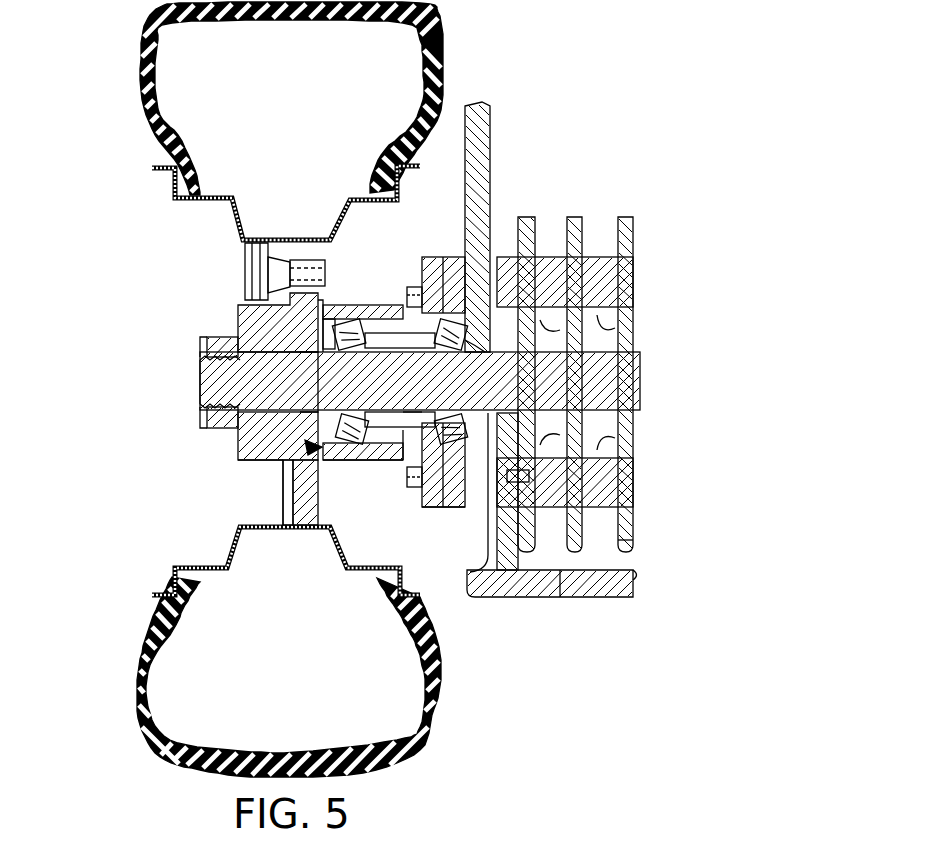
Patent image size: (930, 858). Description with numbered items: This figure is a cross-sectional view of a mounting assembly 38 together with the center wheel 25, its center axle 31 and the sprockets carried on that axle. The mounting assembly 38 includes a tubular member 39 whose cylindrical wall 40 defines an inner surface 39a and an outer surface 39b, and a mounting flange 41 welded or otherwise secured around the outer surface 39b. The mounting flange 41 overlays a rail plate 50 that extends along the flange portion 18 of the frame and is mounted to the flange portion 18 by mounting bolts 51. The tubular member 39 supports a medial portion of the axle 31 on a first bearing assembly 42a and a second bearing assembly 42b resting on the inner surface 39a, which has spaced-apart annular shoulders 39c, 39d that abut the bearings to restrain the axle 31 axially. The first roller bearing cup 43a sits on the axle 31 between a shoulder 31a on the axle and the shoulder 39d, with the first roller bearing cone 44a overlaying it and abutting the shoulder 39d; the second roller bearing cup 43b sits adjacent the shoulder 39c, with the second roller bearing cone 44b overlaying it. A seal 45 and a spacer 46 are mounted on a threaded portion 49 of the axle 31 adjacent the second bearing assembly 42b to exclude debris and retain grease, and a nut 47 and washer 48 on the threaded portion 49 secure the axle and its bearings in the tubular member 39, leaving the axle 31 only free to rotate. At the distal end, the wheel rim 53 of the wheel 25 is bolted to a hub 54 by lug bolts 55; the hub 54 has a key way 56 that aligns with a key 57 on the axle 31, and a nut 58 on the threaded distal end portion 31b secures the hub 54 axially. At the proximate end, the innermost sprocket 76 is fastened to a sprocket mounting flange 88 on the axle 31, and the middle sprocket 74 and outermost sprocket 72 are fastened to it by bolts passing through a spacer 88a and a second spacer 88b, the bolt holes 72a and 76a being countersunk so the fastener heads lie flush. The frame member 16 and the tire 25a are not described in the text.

The housing bracket 16 is at (637, 597).
The flange portion 18 is at (482, 110).
The center wheel 25 is at (154, 767).
The tire 25a is at (440, 60).
The center axle 31 is at (642, 375).
The shoulder 31a is at (497, 370).
The threaded distal end portion 31b is at (197, 397).
The mounting assembly 38 is at (445, 262).
The tubular member 39 is at (360, 462).
The inner surface 39a is at (400, 425).
The outer surface 39b is at (408, 262).
The first annular shoulder 39c is at (280, 500).
The second annular shoulder 39d is at (442, 430).
The cylindrical wall 40 is at (392, 462).
The mounting flange 41 is at (430, 480).
The first bearing assembly 42a is at (633, 268).
The second bearing assembly 42b is at (282, 480).
The first roller bearing cup 43a is at (575, 235).
The second roller bearing cup 43b is at (368, 303).
The first roller bearing cone 44a is at (530, 250).
The second roller bearing cone 44b is at (397, 300).
The seal 45 is at (330, 240).
The spacer 46 is at (320, 415).
The nut 47 is at (247, 320).
The washer 48 is at (247, 442).
The threaded portion 49 is at (290, 368).
The rail plate 50 is at (445, 510).
The mounting bolts 51 is at (425, 465).
The wheel rim 53 is at (155, 595).
The hub 54 is at (280, 460).
The lug bolts 55 is at (245, 250).
The key way 56 is at (238, 330).
The key 57 is at (198, 377).
The nut 58 is at (210, 343).
The outermost sprocket 72 is at (635, 223).
The bolt holes 72a is at (640, 545).
The middle sprocket 74 is at (632, 228).
The innermost sprocket 76 is at (525, 560).
The bolt holes 76a is at (555, 560).
The sprocket mounting flange 88 is at (497, 520).
The spacer 88a is at (600, 315).
The second spacer 88b is at (600, 325).